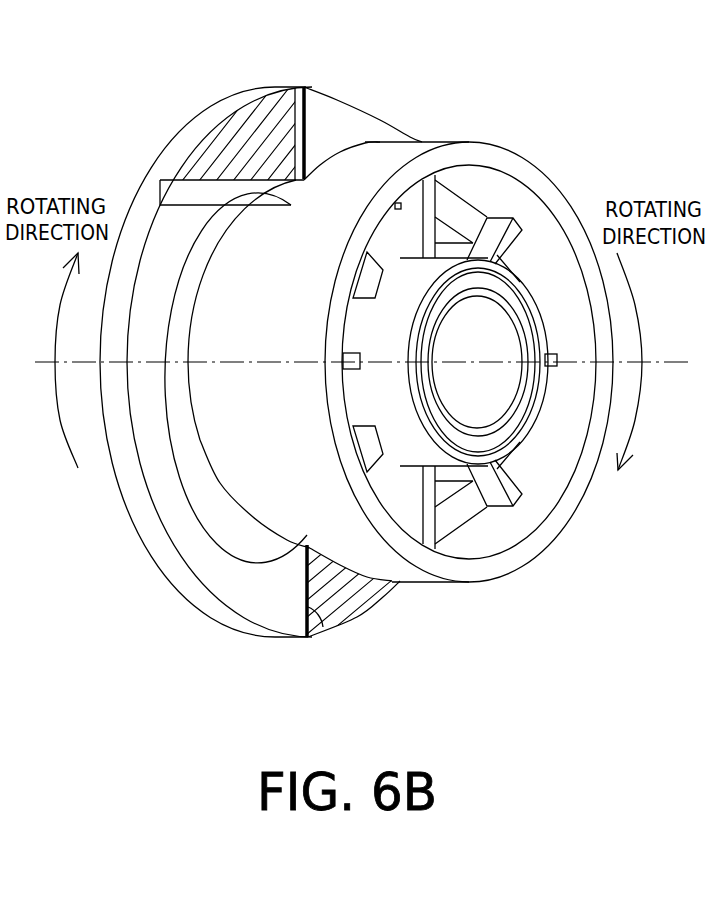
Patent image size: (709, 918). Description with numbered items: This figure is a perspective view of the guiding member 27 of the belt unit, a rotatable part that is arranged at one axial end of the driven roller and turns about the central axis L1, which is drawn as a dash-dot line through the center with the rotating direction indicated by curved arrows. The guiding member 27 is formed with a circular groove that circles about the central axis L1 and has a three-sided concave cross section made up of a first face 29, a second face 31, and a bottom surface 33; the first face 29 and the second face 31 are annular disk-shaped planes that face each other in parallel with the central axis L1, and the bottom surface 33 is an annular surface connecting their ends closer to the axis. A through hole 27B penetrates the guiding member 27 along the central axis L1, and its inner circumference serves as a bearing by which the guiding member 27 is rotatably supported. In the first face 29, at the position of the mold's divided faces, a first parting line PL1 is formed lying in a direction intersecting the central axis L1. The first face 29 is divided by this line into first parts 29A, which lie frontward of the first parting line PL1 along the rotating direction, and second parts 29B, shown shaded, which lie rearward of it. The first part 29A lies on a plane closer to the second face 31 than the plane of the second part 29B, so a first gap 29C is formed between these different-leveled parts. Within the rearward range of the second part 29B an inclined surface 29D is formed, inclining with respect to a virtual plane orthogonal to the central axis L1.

The guiding member 27 is at (527, 133).
The through hole 27B is at (477, 387).
The first face 29 is at (173, 480).
The first part 29A is at (343, 117).
The second part 29B is at (253, 127).
The first gap 29C is at (303, 143).
The inclined surface 29D is at (198, 196).
The second face 31 is at (218, 483).
The bottom surface 33 is at (212, 408).
The first parting line PL1 is at (302, 113).
The central axis L1 is at (653, 360).